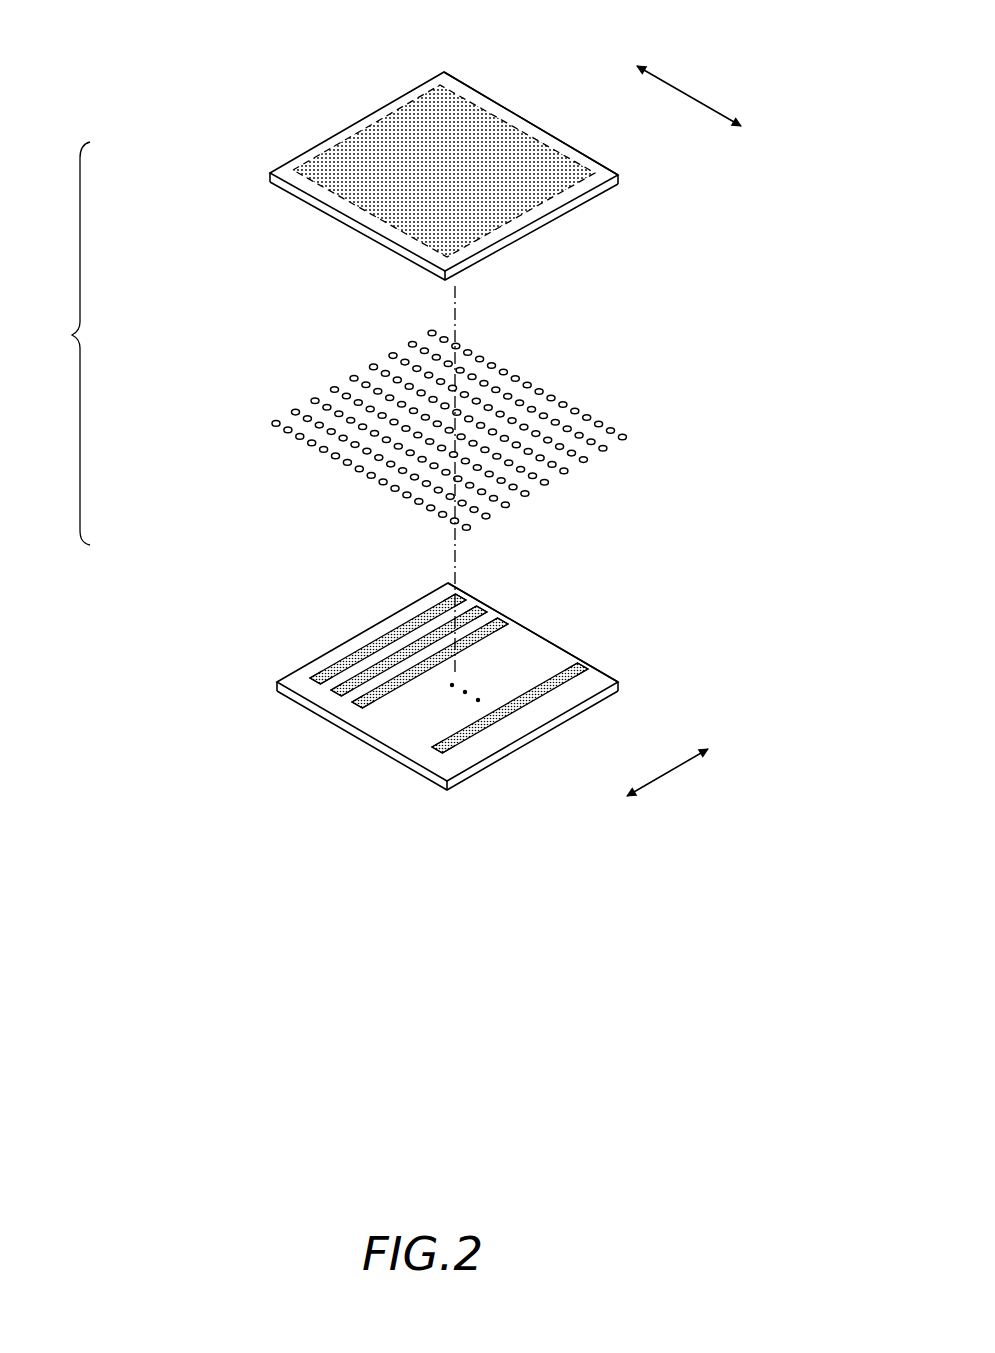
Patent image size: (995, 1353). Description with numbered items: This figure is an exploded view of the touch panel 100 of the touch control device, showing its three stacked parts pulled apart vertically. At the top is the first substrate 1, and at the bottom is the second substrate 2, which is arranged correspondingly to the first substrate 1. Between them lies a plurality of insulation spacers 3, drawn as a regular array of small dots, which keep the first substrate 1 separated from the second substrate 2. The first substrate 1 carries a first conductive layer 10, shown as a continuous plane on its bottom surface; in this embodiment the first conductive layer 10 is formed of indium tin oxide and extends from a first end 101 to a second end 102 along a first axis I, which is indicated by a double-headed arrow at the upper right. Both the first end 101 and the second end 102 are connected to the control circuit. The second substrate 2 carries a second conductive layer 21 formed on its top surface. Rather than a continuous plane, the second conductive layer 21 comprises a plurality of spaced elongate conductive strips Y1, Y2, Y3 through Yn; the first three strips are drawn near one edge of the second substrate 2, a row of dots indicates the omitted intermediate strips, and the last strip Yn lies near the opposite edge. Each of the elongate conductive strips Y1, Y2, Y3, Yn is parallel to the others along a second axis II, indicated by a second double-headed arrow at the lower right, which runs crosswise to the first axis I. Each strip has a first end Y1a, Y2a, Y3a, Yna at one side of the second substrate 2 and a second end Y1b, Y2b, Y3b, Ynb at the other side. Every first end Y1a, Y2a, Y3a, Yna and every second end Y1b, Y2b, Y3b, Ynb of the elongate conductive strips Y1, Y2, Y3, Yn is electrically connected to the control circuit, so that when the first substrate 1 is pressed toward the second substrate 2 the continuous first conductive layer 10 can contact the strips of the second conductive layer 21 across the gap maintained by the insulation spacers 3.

The first substrate 1 is at (466, 148).
The first conductive layer 10 is at (466, 148).
The first end 101 is at (590, 195).
The second end 102 is at (415, 95).
The insulation spacers 3 is at (597, 425).
The second substrate 2 is at (452, 674).
The second conductive layer 21 is at (452, 674).
The elongate conductive strip Y1 is at (352, 632).
The elongate conductive strip Y2 is at (401, 656).
The elongate conductive strip Y3 is at (443, 678).
The elongate conductive strip Yn is at (524, 729).
The first end Y1a is at (463, 598).
The first end Y2a is at (480, 607).
The first end Y3a is at (508, 618).
The first end Yna is at (580, 663).
The second end Y1b is at (292, 689).
The second end Y2b is at (314, 700).
The second end Y3b is at (341, 712).
The second end Ynb is at (421, 760).
The touch panel 100 is at (60, 343).
The first axis I is at (688, 93).
The second axis II is at (670, 772).